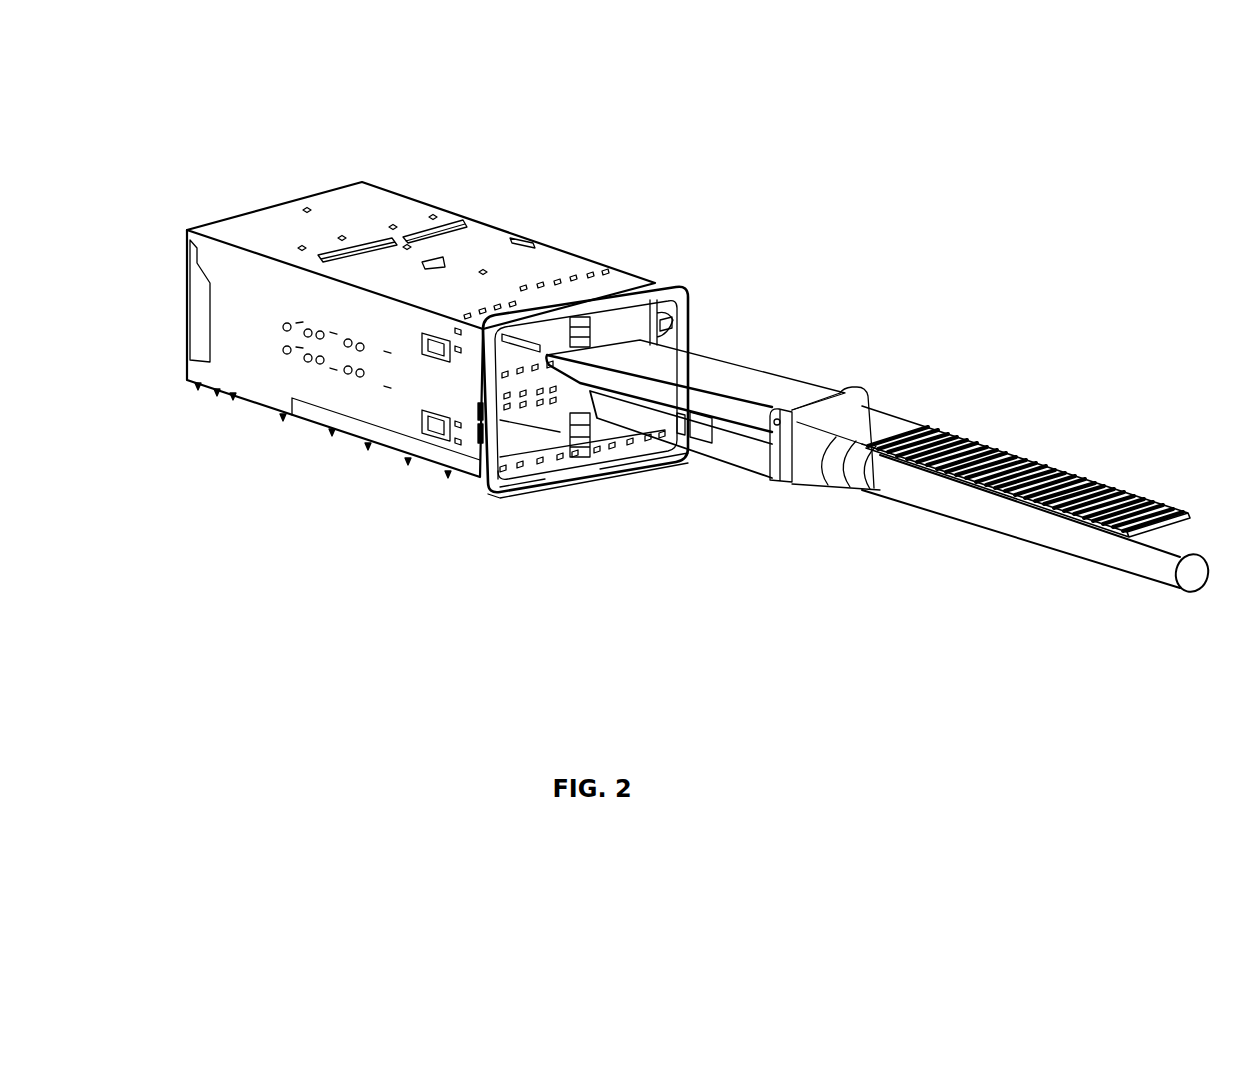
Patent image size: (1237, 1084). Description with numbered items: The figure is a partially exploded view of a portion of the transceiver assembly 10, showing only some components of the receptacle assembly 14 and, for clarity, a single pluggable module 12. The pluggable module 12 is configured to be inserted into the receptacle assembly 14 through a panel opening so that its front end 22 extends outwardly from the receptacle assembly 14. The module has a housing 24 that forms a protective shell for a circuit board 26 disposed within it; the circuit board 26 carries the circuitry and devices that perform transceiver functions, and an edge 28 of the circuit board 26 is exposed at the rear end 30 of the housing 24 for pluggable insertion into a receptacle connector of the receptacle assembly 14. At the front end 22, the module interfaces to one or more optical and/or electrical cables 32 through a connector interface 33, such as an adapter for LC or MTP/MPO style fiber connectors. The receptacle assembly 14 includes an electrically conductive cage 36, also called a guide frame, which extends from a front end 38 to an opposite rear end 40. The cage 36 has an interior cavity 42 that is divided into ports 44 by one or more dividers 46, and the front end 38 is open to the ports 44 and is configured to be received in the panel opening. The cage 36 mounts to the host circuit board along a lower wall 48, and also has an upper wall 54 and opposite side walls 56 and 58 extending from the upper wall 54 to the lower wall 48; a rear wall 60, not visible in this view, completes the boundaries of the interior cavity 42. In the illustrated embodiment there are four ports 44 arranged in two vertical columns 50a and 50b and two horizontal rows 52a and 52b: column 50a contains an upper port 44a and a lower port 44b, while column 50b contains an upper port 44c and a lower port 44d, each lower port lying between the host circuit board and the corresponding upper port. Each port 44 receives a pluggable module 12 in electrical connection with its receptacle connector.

The transceiver assembly 10 is at (778, 136).
The pluggable module 12 is at (879, 466).
The receptacle assembly 14 is at (532, 204).
The front end 22 is at (778, 493).
The housing 24 is at (726, 378).
The circuit board 26 is at (558, 392).
The edge 28 is at (556, 402).
The rear end 30 is at (680, 294).
The cable 32 is at (1028, 518).
The connector interface 33 is at (786, 452).
The cage 36 is at (360, 182).
The front end 38 is at (658, 275).
The rear end 40 is at (283, 197).
The interior cavity 42 is at (458, 279).
The port 44 is at (677, 323).
The upper port 44a is at (553, 341).
The lower port 44b is at (572, 414).
The upper port 44c is at (632, 317).
The lower port 44d is at (620, 455).
The divider 46 is at (500, 481).
The lower wall 48 is at (486, 490).
The column 50a is at (542, 507).
The column 50b is at (657, 483).
The row 52a is at (463, 361).
The row 52b is at (443, 447).
The upper wall 54 is at (412, 216).
The side wall 56 is at (265, 376).
The side wall 58 is at (615, 315).
The rear wall 60 is at (237, 215).